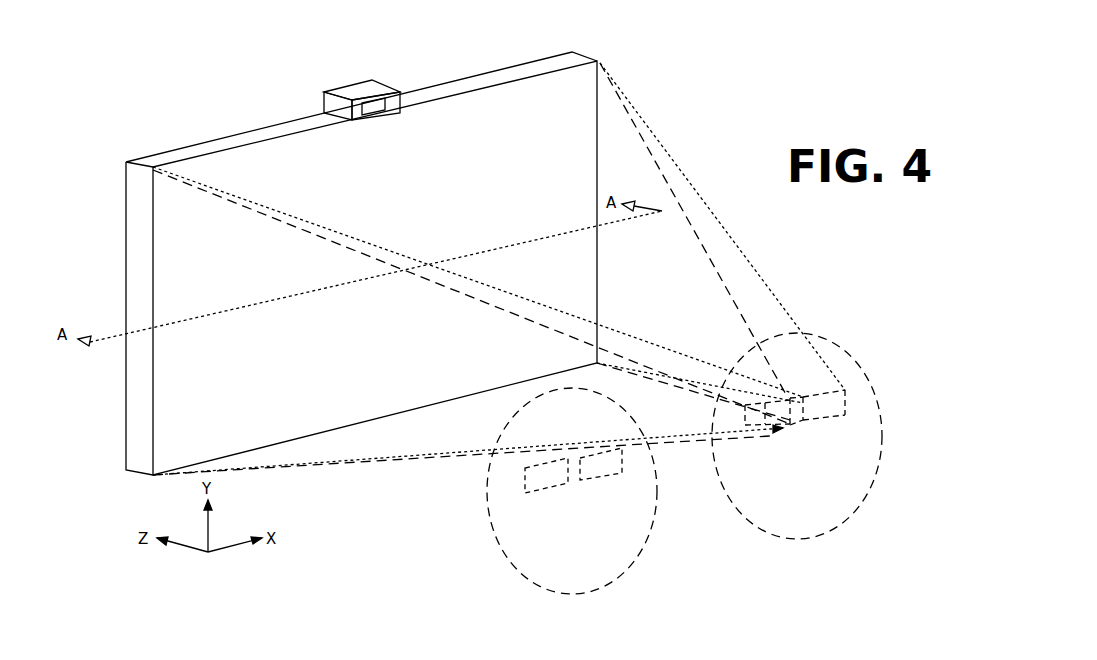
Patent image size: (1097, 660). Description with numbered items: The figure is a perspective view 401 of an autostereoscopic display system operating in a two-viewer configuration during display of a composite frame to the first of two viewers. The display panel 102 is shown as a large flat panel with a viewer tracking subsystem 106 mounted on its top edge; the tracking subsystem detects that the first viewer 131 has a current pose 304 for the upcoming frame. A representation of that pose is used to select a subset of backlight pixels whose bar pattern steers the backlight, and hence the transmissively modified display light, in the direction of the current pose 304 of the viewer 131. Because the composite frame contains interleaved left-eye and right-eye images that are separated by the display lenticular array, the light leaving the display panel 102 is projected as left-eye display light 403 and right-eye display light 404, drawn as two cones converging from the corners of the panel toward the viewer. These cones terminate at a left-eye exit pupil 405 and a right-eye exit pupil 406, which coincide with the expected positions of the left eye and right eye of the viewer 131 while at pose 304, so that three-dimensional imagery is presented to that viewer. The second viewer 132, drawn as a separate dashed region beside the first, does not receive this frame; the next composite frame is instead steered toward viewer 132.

The display panel 102 is at (108, 290).
The viewer tracking subsystem 106 is at (372, 80).
The perspective view 401 is at (733, 52).
The left-eye display light 403 is at (728, 282).
The right-eye display light 404 is at (790, 313).
The current pose 304 is at (862, 346).
The viewer 131 is at (823, 539).
The viewer 132 is at (614, 578).
The left-eye exit pupil 405 is at (770, 434).
The right-eye exit pupil 406 is at (842, 418).